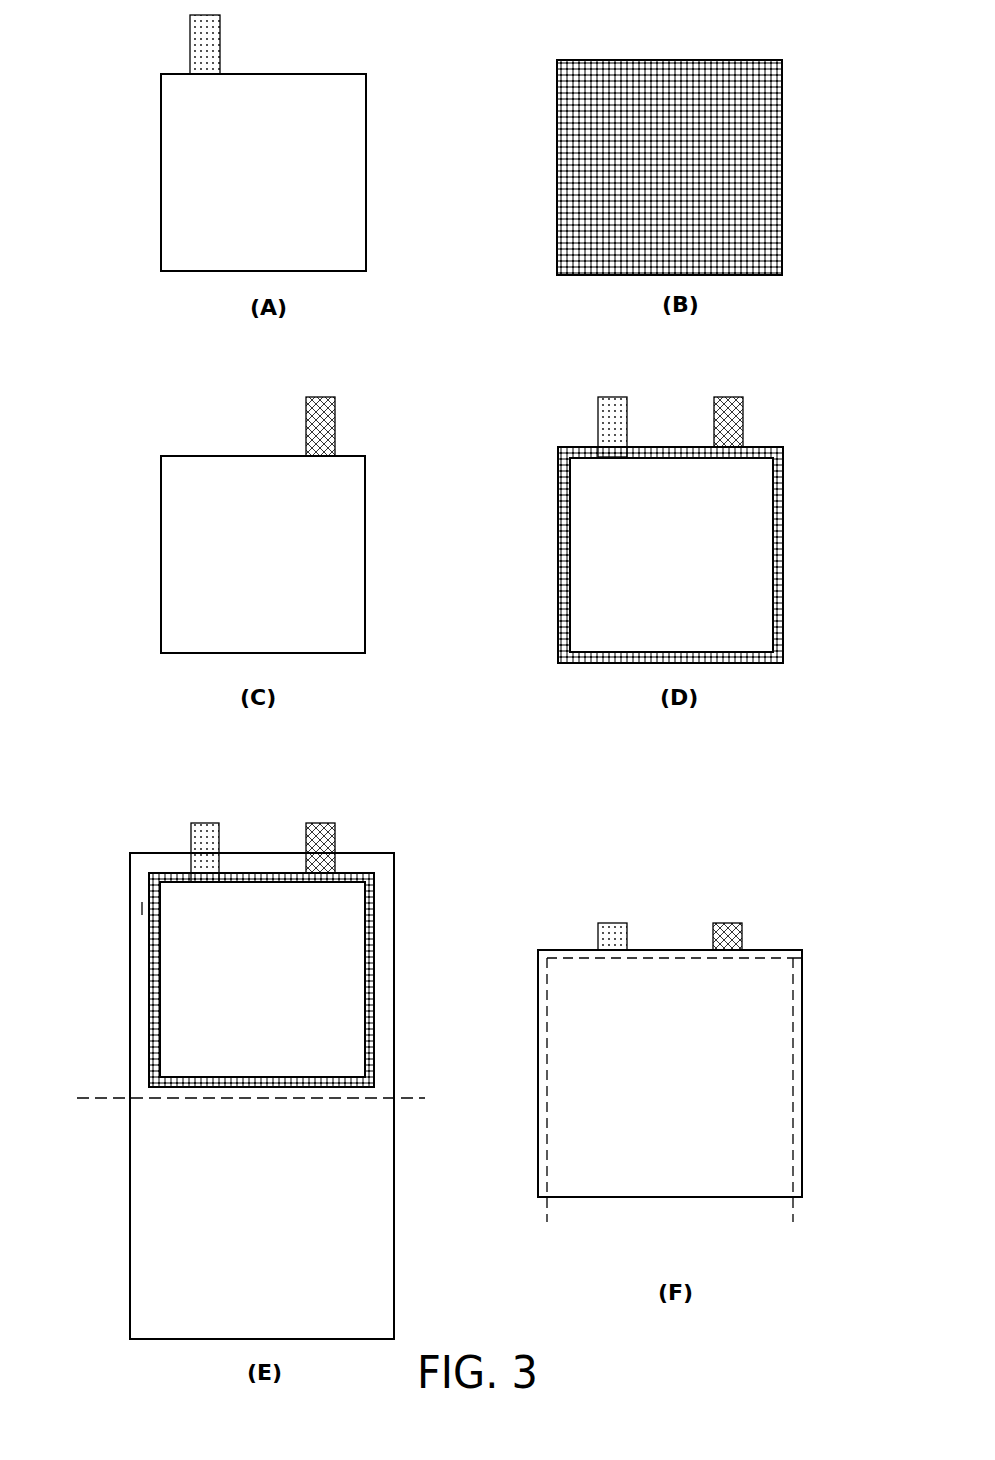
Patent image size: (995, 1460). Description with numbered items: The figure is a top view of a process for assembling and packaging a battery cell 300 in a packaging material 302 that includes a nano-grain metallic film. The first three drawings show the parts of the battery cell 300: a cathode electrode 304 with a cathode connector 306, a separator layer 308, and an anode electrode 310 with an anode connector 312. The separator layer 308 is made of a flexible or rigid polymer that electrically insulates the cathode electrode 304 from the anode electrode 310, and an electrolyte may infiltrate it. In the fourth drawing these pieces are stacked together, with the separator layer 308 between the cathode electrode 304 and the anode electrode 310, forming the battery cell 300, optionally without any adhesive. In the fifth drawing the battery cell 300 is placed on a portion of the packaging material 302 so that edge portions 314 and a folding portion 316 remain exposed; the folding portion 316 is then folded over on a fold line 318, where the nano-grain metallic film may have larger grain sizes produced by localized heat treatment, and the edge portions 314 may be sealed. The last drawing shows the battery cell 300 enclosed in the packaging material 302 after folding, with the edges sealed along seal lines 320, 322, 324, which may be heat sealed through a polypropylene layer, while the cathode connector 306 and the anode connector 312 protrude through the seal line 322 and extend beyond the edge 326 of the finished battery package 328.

The battery cell 300 is at (546, 548).
The packaging material 302 is at (216, 1284).
The cathode electrode 304 is at (229, 146).
The cathode connector 306 is at (190, 60).
The separator layer 308 is at (782, 108).
The anode electrode 310 is at (229, 521).
The anode connector 312 is at (335, 433).
The edge portions 314 is at (142, 908).
The folding portion 316 is at (286, 1209).
The fold line 318 is at (77, 1098).
The seal line 320 is at (547, 1222).
The seal line 322 is at (805, 957).
The seal line 324 is at (793, 1222).
The edge 326 is at (573, 948).
The battery package 328 is at (742, 858).